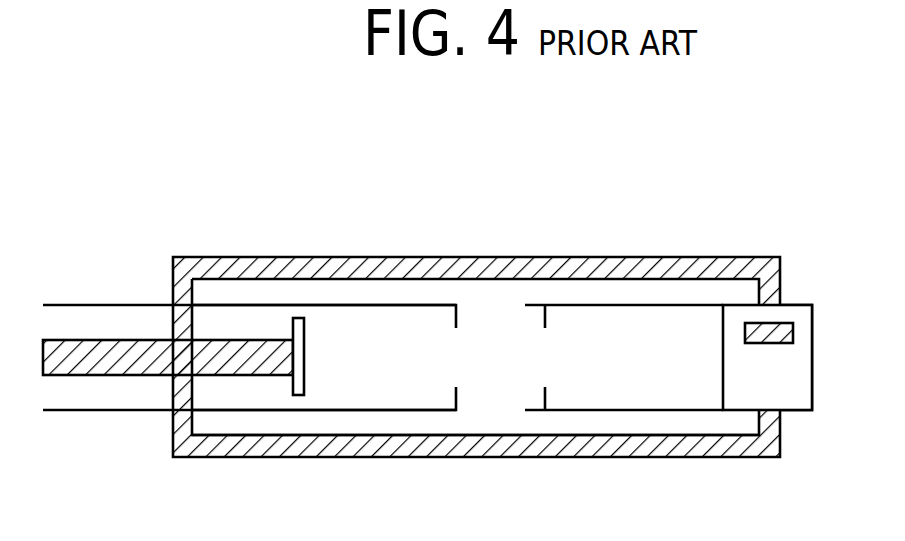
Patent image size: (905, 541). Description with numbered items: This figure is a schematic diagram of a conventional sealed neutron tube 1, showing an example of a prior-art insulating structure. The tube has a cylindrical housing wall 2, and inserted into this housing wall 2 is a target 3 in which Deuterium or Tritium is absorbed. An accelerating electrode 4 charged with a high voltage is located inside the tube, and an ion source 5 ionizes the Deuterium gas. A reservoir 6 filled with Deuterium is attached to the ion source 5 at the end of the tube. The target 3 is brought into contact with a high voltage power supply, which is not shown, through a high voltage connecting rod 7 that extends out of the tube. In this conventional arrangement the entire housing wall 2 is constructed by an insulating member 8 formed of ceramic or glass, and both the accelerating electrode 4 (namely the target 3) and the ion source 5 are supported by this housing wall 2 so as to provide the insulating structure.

The sealed neutron tube 1 is at (494, 182).
The cylindrical housing wall 2 is at (567, 257).
The target 3 is at (307, 344).
The accelerating electrode 4 is at (422, 305).
The ion source 5 is at (668, 303).
The reservoir 6 is at (793, 328).
The high voltage connecting rod 7 is at (107, 340).
The insulating member 8 is at (442, 447).